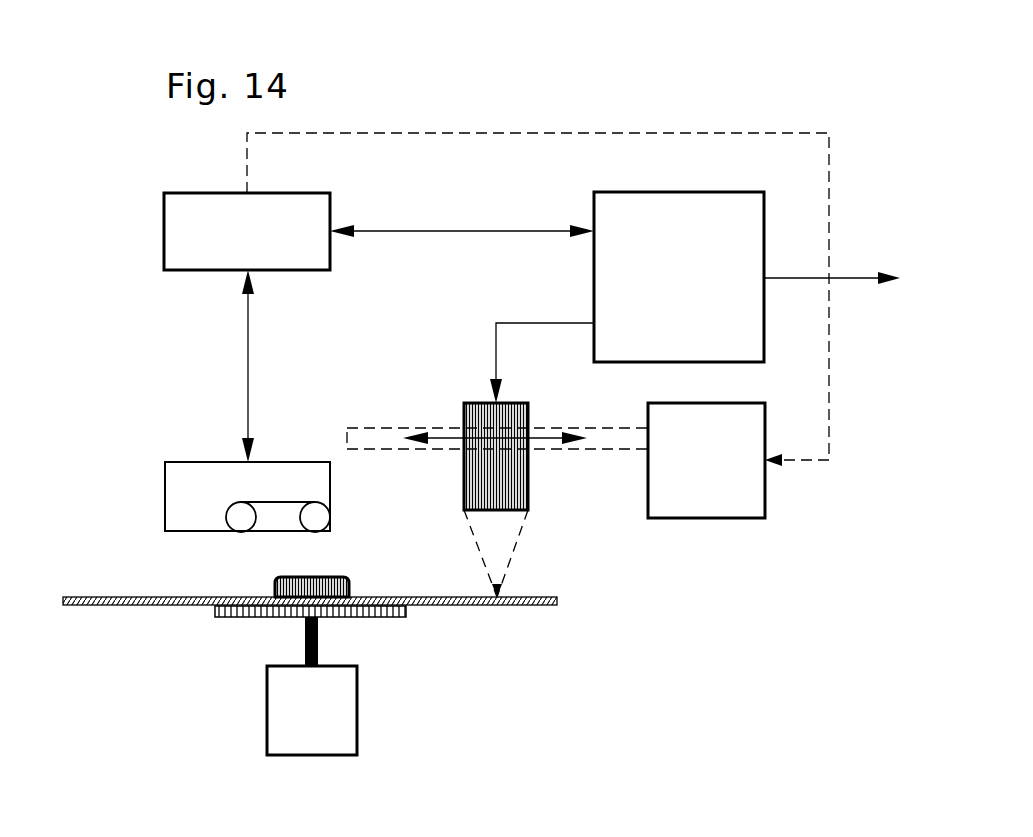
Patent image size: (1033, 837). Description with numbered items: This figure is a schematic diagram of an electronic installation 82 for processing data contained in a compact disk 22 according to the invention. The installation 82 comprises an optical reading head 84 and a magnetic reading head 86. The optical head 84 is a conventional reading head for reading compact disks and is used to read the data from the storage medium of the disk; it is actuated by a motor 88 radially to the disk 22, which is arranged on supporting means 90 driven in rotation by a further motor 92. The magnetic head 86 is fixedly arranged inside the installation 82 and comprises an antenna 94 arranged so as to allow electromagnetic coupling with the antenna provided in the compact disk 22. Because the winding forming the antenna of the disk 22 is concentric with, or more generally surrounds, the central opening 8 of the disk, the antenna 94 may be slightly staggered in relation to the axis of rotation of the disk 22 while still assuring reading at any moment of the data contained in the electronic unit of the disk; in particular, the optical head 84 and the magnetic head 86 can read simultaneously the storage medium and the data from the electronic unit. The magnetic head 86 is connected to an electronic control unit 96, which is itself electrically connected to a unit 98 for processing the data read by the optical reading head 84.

The opening 8 is at (362, 579).
The compact disk 22 is at (116, 600).
The installation 82 is at (433, 116).
The optical reading head 84 is at (505, 478).
The magnetic reading head 86 is at (197, 484).
The motor 88 is at (732, 497).
The supporting means 90 is at (350, 612).
The motor 92 is at (327, 735).
The antenna 94 is at (241, 517).
The electronic control unit 96 is at (190, 208).
The processing unit 98 is at (718, 227).